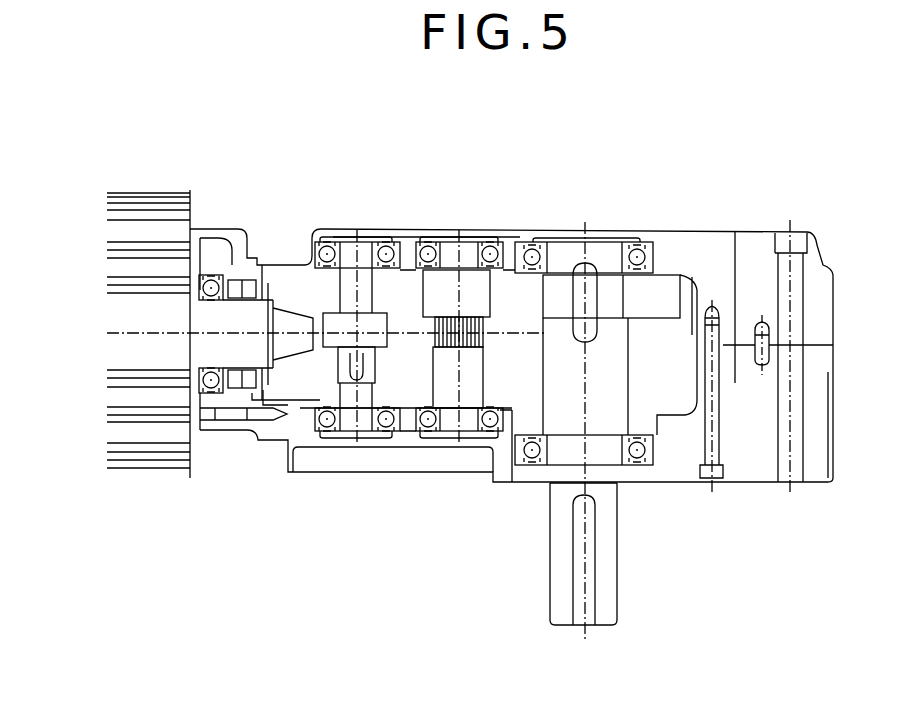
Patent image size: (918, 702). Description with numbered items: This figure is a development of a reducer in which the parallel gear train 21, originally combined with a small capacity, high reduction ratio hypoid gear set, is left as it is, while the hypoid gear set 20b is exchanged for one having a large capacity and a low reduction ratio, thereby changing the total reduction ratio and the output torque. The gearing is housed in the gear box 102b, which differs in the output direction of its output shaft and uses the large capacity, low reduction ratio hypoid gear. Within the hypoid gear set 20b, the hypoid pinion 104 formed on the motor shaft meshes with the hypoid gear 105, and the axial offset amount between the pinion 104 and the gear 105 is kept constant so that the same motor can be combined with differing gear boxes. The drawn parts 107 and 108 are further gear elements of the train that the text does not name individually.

The hypoid pinion 104 is at (300, 327).
The gear 107 is at (325, 345).
The hypoid gear 105 is at (341, 345).
The output gear 108 is at (648, 290).
The gear box 102b is at (772, 303).
The hypoid gear set 20b is at (300, 387).
The parallel gear train 21 is at (405, 437).